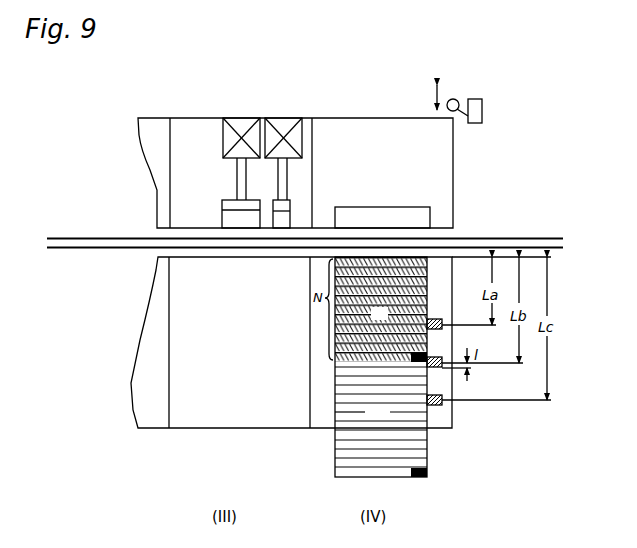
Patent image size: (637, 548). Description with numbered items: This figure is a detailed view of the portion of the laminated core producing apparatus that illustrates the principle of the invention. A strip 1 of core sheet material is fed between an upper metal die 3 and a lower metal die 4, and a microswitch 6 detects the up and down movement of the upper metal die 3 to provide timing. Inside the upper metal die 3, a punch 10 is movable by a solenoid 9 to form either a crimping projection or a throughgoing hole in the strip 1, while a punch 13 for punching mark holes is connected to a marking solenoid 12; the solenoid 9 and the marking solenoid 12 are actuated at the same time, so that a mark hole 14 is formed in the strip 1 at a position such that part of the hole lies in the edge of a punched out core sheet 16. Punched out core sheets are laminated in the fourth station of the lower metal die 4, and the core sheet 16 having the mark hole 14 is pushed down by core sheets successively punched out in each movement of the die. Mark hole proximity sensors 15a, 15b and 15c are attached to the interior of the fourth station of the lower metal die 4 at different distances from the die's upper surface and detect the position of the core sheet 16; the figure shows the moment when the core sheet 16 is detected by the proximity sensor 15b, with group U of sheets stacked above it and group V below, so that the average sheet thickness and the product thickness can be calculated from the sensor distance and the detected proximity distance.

The strip 1 is at (113, 238).
The upper metal die 3 is at (150, 137).
The lower metal die 4 is at (200, 421).
The microswitch 6 is at (479, 107).
The solenoid 9 is at (240, 127).
The punch 10 is at (228, 217).
The marking solenoid 12 is at (285, 125).
The punch for punching mark holes 13 is at (288, 203).
The mark hole 14 is at (419, 359).
The mark hole proximity sensor 15a is at (443, 325).
The mark hole proximity sensor 15b is at (443, 367).
The mark hole proximity sensor 15c is at (443, 404).
The core sheet 16 is at (367, 358).